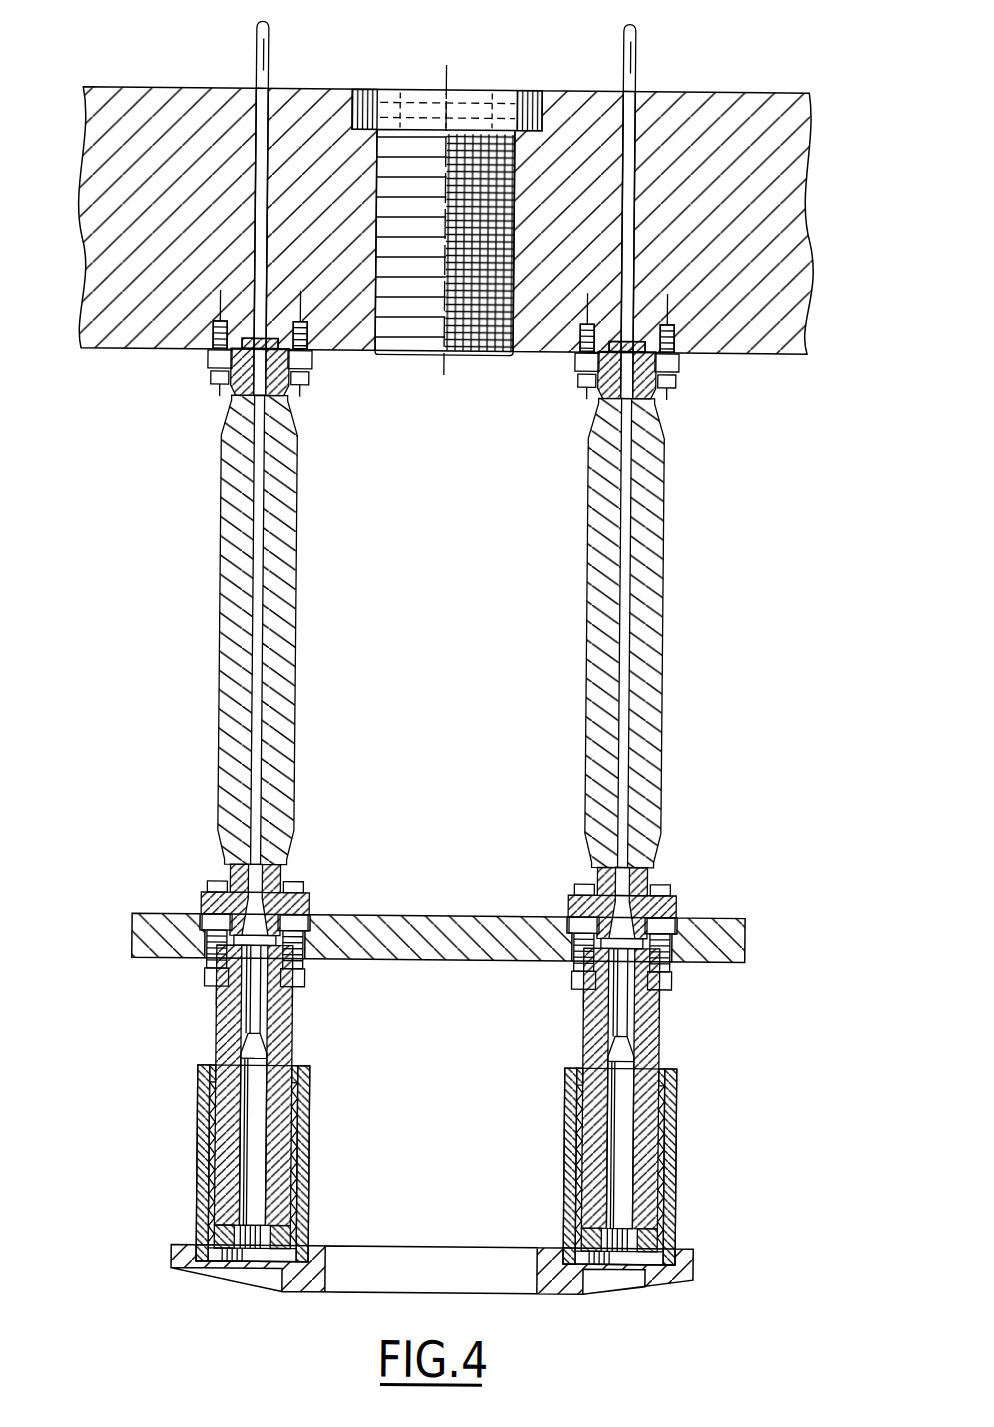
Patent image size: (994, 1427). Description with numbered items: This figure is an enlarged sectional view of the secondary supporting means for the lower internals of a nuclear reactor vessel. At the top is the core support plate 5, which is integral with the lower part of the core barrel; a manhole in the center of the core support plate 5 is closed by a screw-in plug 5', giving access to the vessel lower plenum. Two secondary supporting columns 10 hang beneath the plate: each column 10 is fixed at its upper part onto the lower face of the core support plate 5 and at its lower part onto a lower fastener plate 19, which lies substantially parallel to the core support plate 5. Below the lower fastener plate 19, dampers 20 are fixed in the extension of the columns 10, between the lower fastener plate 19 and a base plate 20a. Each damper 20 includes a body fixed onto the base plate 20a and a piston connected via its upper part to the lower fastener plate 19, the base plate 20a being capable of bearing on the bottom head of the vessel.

The core support plate 5 is at (446, 183).
The screw-in plug 5' is at (446, 193).
The secondary supporting column 10 is at (204, 671).
The lower fastener plate 19 is at (392, 928).
The damper 20 is at (185, 1132).
The base plate 20a is at (455, 1257).